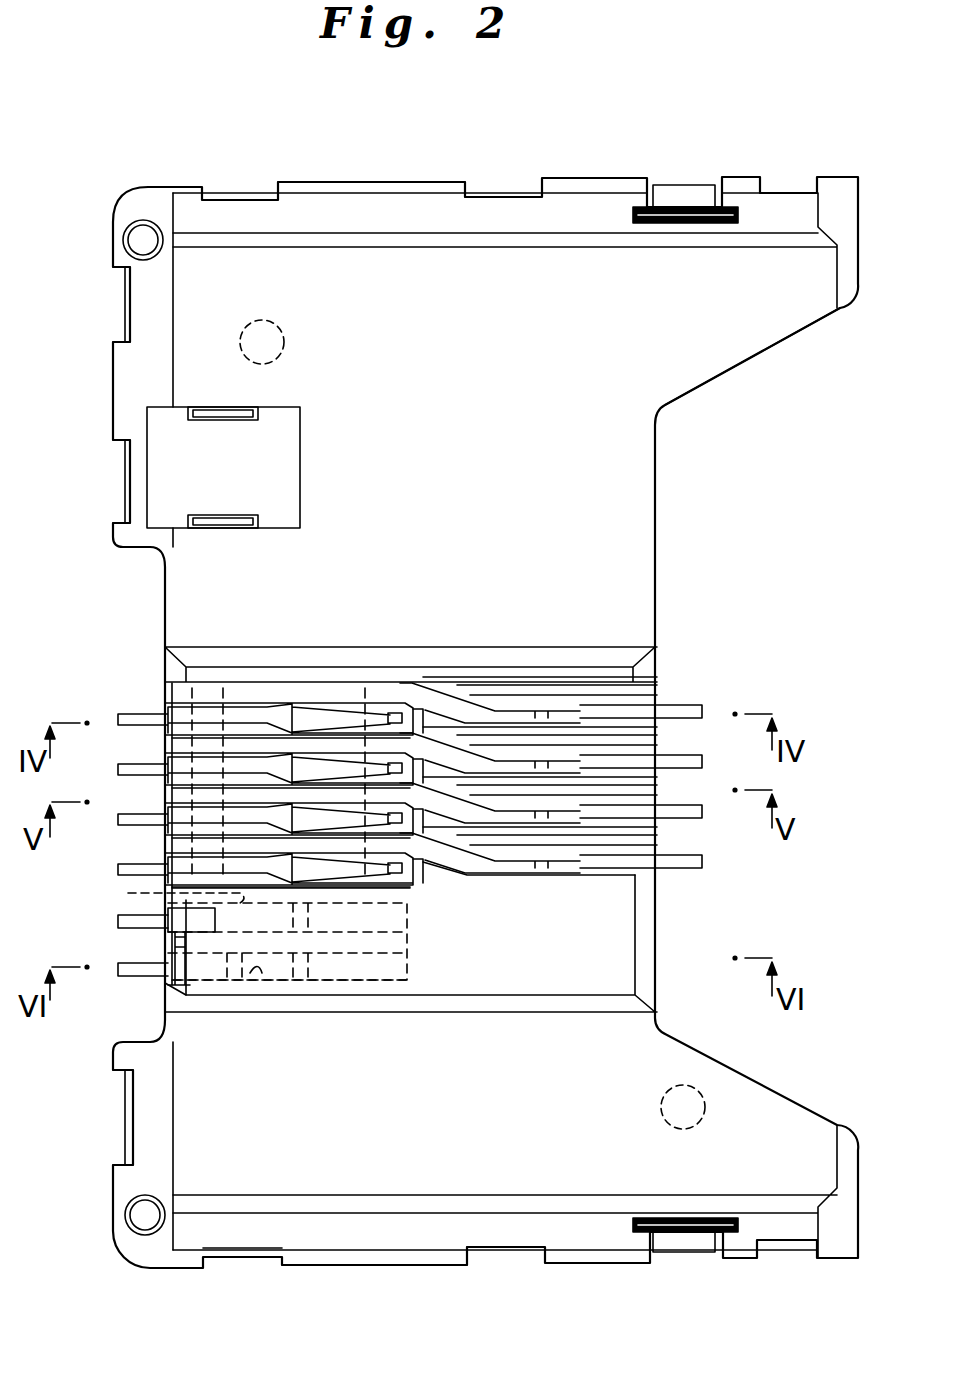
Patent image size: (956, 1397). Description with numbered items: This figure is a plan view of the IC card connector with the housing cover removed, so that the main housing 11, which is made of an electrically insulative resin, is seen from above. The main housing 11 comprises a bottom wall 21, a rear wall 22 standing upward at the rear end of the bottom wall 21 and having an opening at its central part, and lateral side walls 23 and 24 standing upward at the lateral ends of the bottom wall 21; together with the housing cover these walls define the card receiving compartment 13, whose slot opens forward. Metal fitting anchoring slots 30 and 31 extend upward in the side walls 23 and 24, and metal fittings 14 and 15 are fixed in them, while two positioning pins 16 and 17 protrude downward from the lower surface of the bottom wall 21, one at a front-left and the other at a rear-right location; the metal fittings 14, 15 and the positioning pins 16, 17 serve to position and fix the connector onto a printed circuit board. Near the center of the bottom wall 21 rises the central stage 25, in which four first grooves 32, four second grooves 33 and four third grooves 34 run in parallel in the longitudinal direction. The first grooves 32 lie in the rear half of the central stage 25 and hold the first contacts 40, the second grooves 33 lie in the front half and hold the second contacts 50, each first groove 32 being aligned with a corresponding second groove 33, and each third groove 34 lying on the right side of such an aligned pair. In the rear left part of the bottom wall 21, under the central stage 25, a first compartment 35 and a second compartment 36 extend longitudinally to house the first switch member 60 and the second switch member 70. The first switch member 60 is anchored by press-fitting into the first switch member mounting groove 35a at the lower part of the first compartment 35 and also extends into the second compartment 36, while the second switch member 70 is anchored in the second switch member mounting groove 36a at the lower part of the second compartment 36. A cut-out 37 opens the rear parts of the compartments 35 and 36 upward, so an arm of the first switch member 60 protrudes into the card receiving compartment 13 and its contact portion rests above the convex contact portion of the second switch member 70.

The main housing 11 is at (485, 696).
The card receiving compartment 13 is at (485, 522).
The metal fitting 14 is at (672, 1252).
The metal fitting 15 is at (680, 186).
The positioning pin 16 is at (702, 1092).
The positioning pin 17 is at (252, 325).
The bottom wall 21 is at (650, 492).
The rear wall 22 is at (128, 388).
The lateral side wall 23 is at (390, 1268).
The lateral side wall 24 is at (383, 190).
The central stage 25 is at (582, 975).
The metal fitting anchoring slot 30 is at (707, 1258).
The metal fitting anchoring slot 31 is at (712, 188).
The first groove 32 is at (410, 877).
The second groove 33 is at (445, 872).
The third groove 34 is at (598, 858).
The first compartment 35 is at (400, 977).
The first switch member mounting groove 35a is at (154, 894).
The second compartment 36 is at (408, 985).
The second switch member mounting groove 36a is at (257, 973).
The cut-out 37 is at (212, 915).
The first contact 40 is at (118, 728).
The second contact 50 is at (703, 719).
The first switch member 60 is at (130, 927).
The second switch member 70 is at (125, 978).